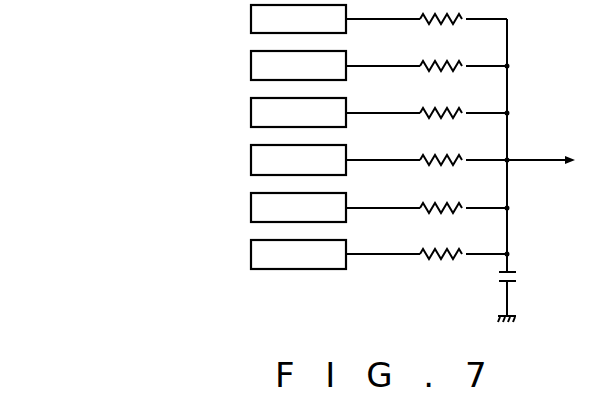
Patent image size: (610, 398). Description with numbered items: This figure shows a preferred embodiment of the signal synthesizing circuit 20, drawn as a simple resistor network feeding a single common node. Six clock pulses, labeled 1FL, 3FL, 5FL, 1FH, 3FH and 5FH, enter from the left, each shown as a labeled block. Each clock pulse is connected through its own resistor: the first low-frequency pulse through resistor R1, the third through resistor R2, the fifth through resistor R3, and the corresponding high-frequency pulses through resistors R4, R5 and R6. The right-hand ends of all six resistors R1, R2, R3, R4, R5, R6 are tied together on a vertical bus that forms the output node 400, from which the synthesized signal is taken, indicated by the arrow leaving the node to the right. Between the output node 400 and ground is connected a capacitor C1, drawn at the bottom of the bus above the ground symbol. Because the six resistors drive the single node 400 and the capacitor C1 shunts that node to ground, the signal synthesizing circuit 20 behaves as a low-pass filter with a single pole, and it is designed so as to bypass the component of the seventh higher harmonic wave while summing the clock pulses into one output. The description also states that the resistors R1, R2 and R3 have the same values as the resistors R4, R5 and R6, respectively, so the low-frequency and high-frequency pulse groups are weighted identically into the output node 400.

The signal synthesizing circuit 20 is at (407, 161).
The output node 400 is at (509, 157).
The resistor R1 is at (441, 12).
The resistor R2 is at (441, 58).
The resistor R3 is at (441, 105).
The resistor R4 is at (441, 152).
The resistor R5 is at (441, 200).
The resistor R6 is at (441, 246).
The capacitor C1 is at (498, 277).